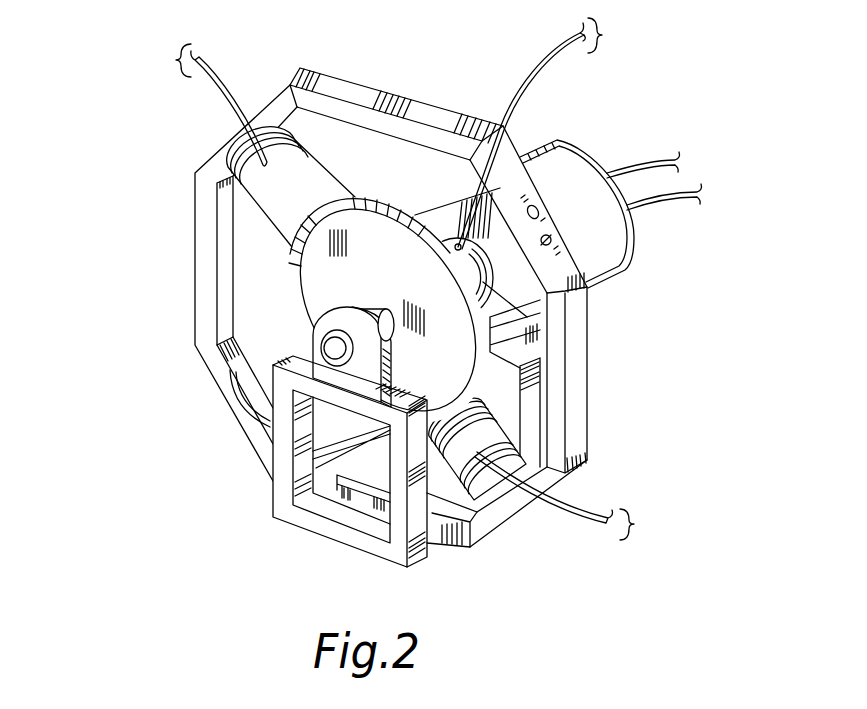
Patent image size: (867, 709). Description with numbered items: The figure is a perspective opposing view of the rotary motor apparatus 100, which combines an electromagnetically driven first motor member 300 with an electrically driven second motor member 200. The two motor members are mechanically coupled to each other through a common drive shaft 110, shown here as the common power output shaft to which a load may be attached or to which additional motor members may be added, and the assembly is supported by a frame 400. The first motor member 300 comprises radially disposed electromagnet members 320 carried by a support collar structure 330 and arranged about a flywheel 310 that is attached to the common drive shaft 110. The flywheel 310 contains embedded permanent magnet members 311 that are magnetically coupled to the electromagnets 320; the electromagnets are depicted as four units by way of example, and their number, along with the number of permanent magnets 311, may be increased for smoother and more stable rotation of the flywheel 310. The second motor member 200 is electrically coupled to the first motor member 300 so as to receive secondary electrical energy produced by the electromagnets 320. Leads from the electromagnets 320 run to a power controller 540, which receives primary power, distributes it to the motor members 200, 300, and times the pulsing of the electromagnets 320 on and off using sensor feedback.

The rotary motor apparatus 100 is at (322, 293).
The common drive shaft 110 is at (323, 349).
The second motor member 200 is at (565, 140).
The first motor member 300 is at (387, 307).
The flywheel 310 is at (380, 207).
The permanent magnet member 311 is at (263, 183).
The electromagnet member 320 is at (411, 313).
The support collar structure 330 is at (358, 85).
The frame 400 is at (320, 534).
The power controller 540 is at (416, 279).